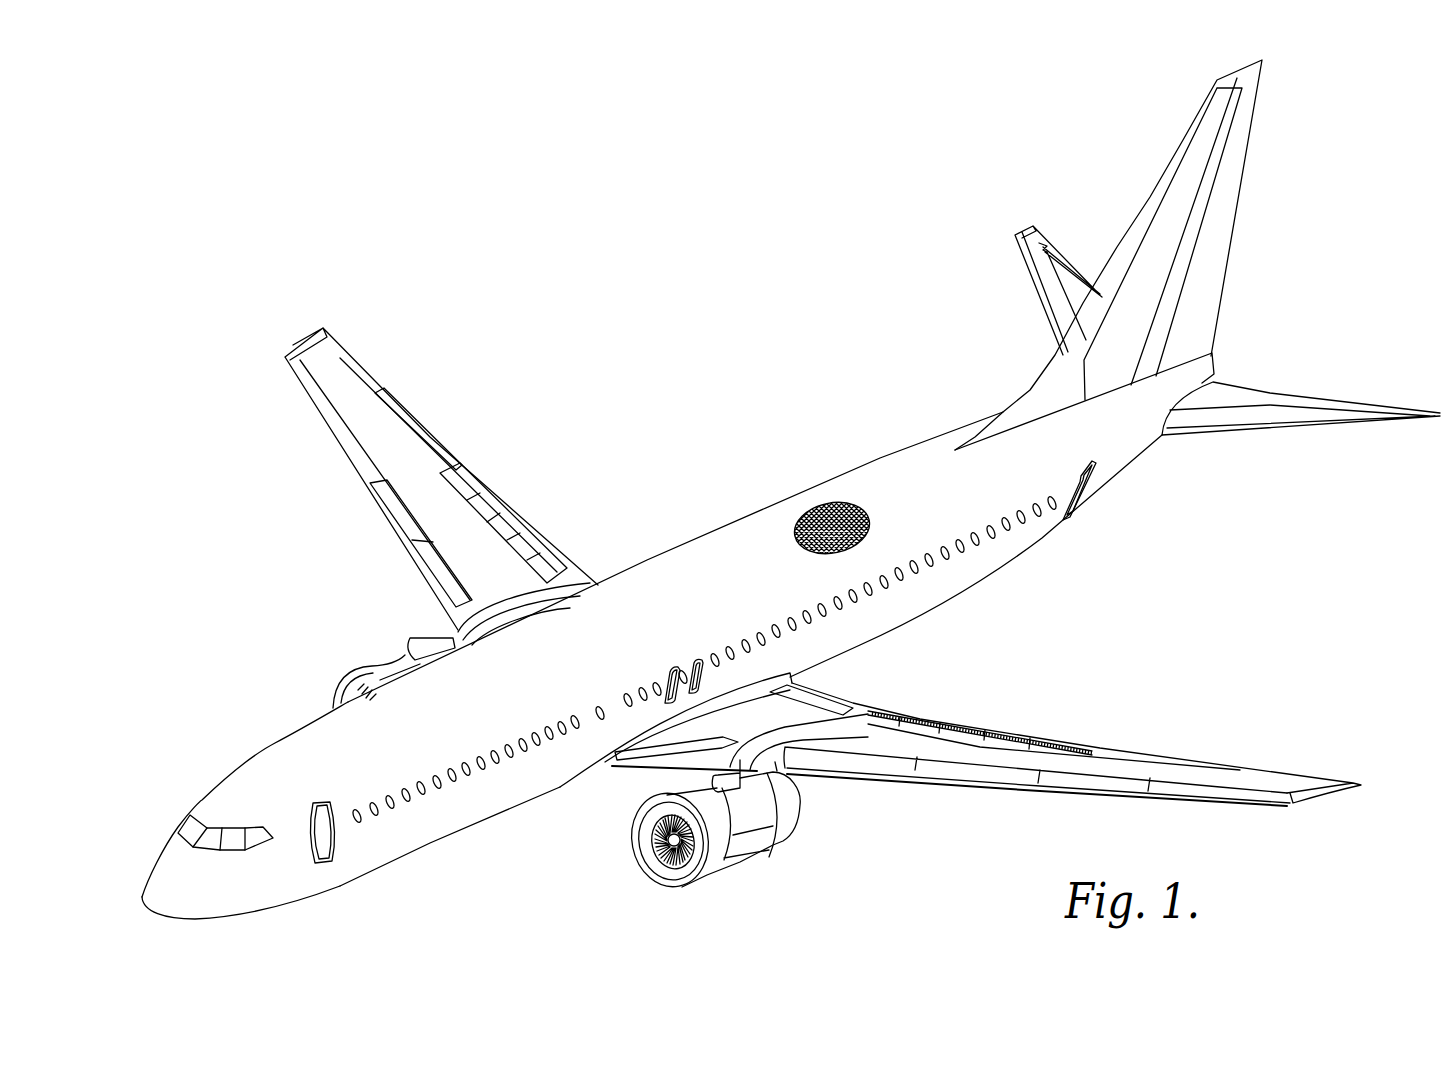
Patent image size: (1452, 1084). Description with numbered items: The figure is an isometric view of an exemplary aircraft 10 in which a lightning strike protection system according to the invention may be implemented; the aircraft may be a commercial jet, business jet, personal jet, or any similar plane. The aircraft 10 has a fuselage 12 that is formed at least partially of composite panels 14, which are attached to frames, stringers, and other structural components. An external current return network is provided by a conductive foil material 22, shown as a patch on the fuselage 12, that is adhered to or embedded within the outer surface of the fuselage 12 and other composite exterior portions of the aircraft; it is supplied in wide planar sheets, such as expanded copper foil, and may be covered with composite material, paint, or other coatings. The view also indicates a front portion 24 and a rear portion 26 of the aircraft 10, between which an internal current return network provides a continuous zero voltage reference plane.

The aircraft 10 is at (688, 405).
The fuselage 12 is at (647, 583).
The composite panels 14 is at (507, 795).
The conductive foil material 22 is at (842, 513).
The front portion 24 is at (177, 860).
The rear portion 26 is at (1140, 442).